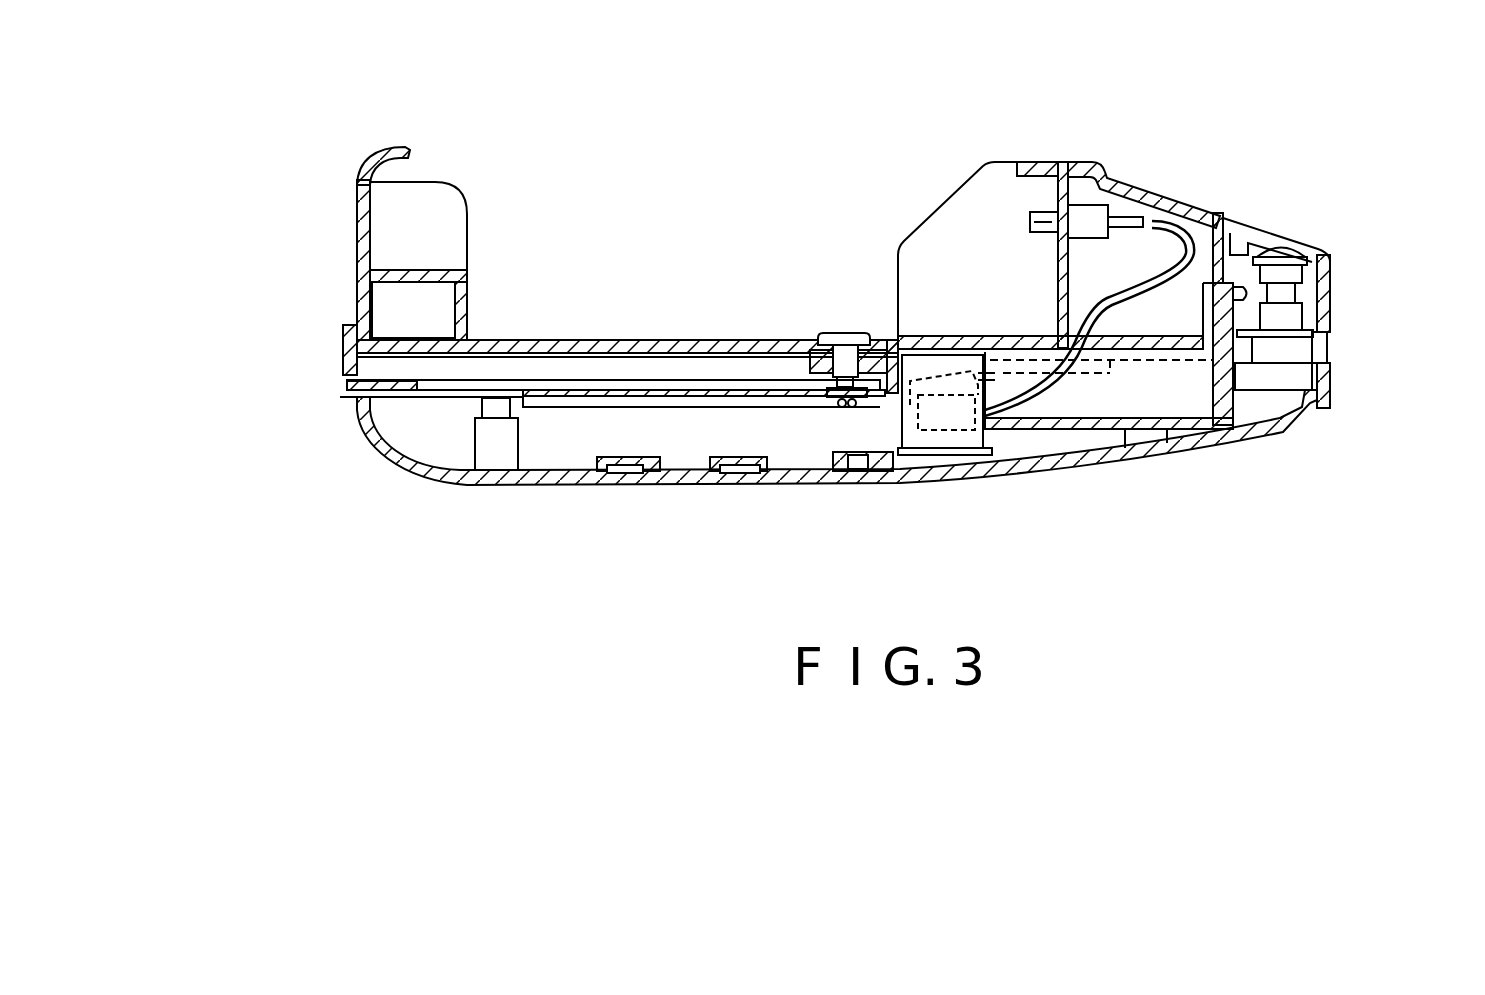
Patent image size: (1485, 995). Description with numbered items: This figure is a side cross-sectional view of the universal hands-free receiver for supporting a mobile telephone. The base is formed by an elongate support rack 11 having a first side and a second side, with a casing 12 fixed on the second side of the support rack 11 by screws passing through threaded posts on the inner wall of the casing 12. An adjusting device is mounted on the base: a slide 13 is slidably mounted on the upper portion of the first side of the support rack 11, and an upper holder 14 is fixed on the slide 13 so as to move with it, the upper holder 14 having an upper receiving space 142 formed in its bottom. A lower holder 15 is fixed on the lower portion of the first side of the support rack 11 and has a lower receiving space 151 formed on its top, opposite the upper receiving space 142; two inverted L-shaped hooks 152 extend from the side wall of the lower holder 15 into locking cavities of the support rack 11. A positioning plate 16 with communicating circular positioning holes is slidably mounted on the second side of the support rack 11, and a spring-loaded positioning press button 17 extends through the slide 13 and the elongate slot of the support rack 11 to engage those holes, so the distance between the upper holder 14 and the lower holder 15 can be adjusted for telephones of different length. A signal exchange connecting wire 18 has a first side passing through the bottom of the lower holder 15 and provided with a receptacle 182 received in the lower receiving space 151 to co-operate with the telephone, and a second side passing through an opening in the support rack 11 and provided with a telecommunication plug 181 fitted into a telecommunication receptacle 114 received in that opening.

The support rack 11 is at (1333, 273).
The casing 12 is at (738, 490).
The slide 13 is at (556, 334).
The upper holder 14 is at (322, 240).
The upper receiving space 142 is at (450, 213).
The lower holder 15 is at (1130, 177).
The lower receiving space 151 is at (947, 250).
The inverted L-shaped hooks 152 is at (1090, 380).
The positioning plate 16 is at (652, 370).
The positioning press button 17 is at (838, 333).
The signal exchange connecting wire 18 is at (1190, 230).
The telecommunication plug 181 is at (933, 420).
The receptacle 182 is at (1032, 230).
The telecommunication receptacle 114 is at (947, 443).